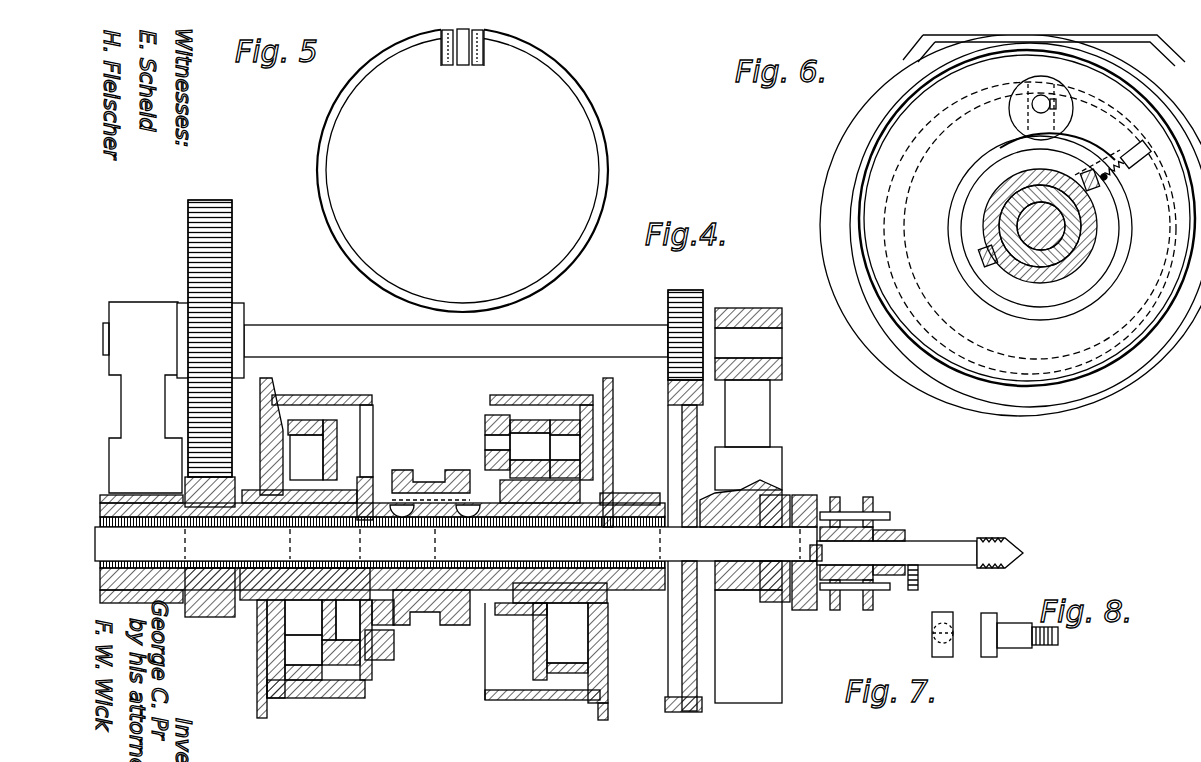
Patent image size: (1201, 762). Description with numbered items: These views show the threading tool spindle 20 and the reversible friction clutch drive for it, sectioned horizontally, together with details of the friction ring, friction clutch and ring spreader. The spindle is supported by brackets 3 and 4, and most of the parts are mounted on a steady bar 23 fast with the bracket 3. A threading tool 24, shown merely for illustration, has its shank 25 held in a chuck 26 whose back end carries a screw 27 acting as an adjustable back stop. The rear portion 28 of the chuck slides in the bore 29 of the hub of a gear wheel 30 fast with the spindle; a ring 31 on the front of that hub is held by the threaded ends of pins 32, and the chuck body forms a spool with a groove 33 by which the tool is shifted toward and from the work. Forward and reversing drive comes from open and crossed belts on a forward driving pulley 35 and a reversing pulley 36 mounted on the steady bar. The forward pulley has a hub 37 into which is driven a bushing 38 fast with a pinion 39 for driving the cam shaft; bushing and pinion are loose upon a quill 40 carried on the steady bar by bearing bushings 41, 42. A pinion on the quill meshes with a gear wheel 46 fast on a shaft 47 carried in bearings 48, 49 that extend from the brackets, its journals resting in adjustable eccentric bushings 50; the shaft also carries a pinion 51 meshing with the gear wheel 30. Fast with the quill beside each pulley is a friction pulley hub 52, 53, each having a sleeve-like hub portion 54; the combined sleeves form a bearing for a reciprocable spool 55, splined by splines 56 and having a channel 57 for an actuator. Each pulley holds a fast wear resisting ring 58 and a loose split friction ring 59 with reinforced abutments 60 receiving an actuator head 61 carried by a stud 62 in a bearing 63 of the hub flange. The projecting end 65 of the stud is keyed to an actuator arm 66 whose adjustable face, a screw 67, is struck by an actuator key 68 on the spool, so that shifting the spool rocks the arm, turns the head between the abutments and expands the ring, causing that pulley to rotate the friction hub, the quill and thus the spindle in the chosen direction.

In FIG. 4, the bracket 3 is at (139, 470).
In FIG. 4, the bracket 4 is at (752, 465).
In FIG. 4, the threading tool spindle 20 is at (895, 541).
In FIG. 6, the steady bar 23 is at (1042, 242).
In FIG. 4, the steady bar 23 is at (456, 544).
In FIG. 4, the threading tool 24 is at (995, 548).
In FIG. 4, the shank 25 is at (925, 548).
In FIG. 4, the chuck 26 is at (862, 514).
In FIG. 4, the screw 27 is at (824, 553).
In FIG. 4, the rear portion of the chuck 28 is at (808, 612).
In FIG. 4, the bore 29 is at (703, 549).
In FIG. 4, the gear wheel 30 is at (682, 452).
In FIG. 4, the ring 31 is at (805, 497).
In FIG. 4, the pins 32 is at (895, 528).
In FIG. 4, the groove 33 is at (850, 602).
In FIG. 6, the forward driving pulley 35 is at (1105, 395).
In FIG. 4, the forward driving pulley 35 is at (560, 700).
In FIG. 4, the reversing pulley 36 is at (318, 698).
In FIG. 4, the hub 37 is at (522, 618).
In FIG. 4, the bushing 38 is at (535, 590).
In FIG. 4, the pinion 39 is at (628, 498).
In FIG. 6, the quill 40 is at (1010, 208).
In FIG. 4, the quill 40 is at (520, 512).
In FIG. 4, the bearing bushing 41 is at (382, 549).
In FIG. 4, the bearing bushing 42 is at (632, 518).
In FIG. 4, the gear wheel 46 is at (212, 297).
In FIG. 4, the shaft 47 is at (293, 345).
In FIG. 4, the bearing 48 is at (136, 330).
In FIG. 4, the bearing 49 is at (738, 314).
In FIG. 4, the eccentric bushings 50 is at (782, 322).
In FIG. 4, the pinion 51 is at (675, 296).
In FIG. 6, the friction pulley hub 52 is at (1040, 233).
In FIG. 4, the friction pulley hub 52 is at (545, 668).
In FIG. 4, the friction pulley hub 53 is at (420, 627).
In FIG. 4, the hub portion 54 is at (352, 535).
In FIG. 6, the reciprocable spool 55 is at (1085, 240).
In FIG. 4, the reciprocable spool 55 is at (425, 478).
In FIG. 4, the splines 56 is at (410, 520).
In FIG. 4, the channel 57 is at (436, 628).
In FIG. 6, the wear resisting ring 58 is at (1035, 372).
In FIG. 4, the wear resisting ring 58 is at (604, 676).
In FIG. 5, the friction ring 59 is at (598, 206).
In FIG. 6, the friction ring 59 is at (1048, 375).
In FIG. 4, the friction ring 59 is at (592, 667).
In FIG. 5, the reinforced abutments 60 is at (445, 63).
In FIG. 6, the reinforced abutments 60 is at (1012, 118).
In FIG. 5, the actuator head 61 is at (461, 66).
In FIG. 6, the actuator head 61 is at (1018, 102).
In FIG. 7, the actuator head 61 is at (945, 622).
In FIG. 6, the stud 62 is at (1040, 114).
In FIG. 4, the stud 62 is at (522, 447).
In FIG. 7, the stud 62 is at (933, 635).
In FIG. 8, the stud 62 is at (1010, 648).
In FIG. 4, the bearing 63 is at (528, 420).
In FIG. 4, the projecting end 65 is at (385, 660).
In FIG. 8, the projecting end 65 is at (1058, 636).
In FIG. 6, the actuator arm 66 is at (1058, 139).
In FIG. 4, the actuator arm 66 is at (487, 430).
In FIG. 6, the screw 67 is at (1125, 172).
In FIG. 6, the actuator key 68 is at (1085, 200).